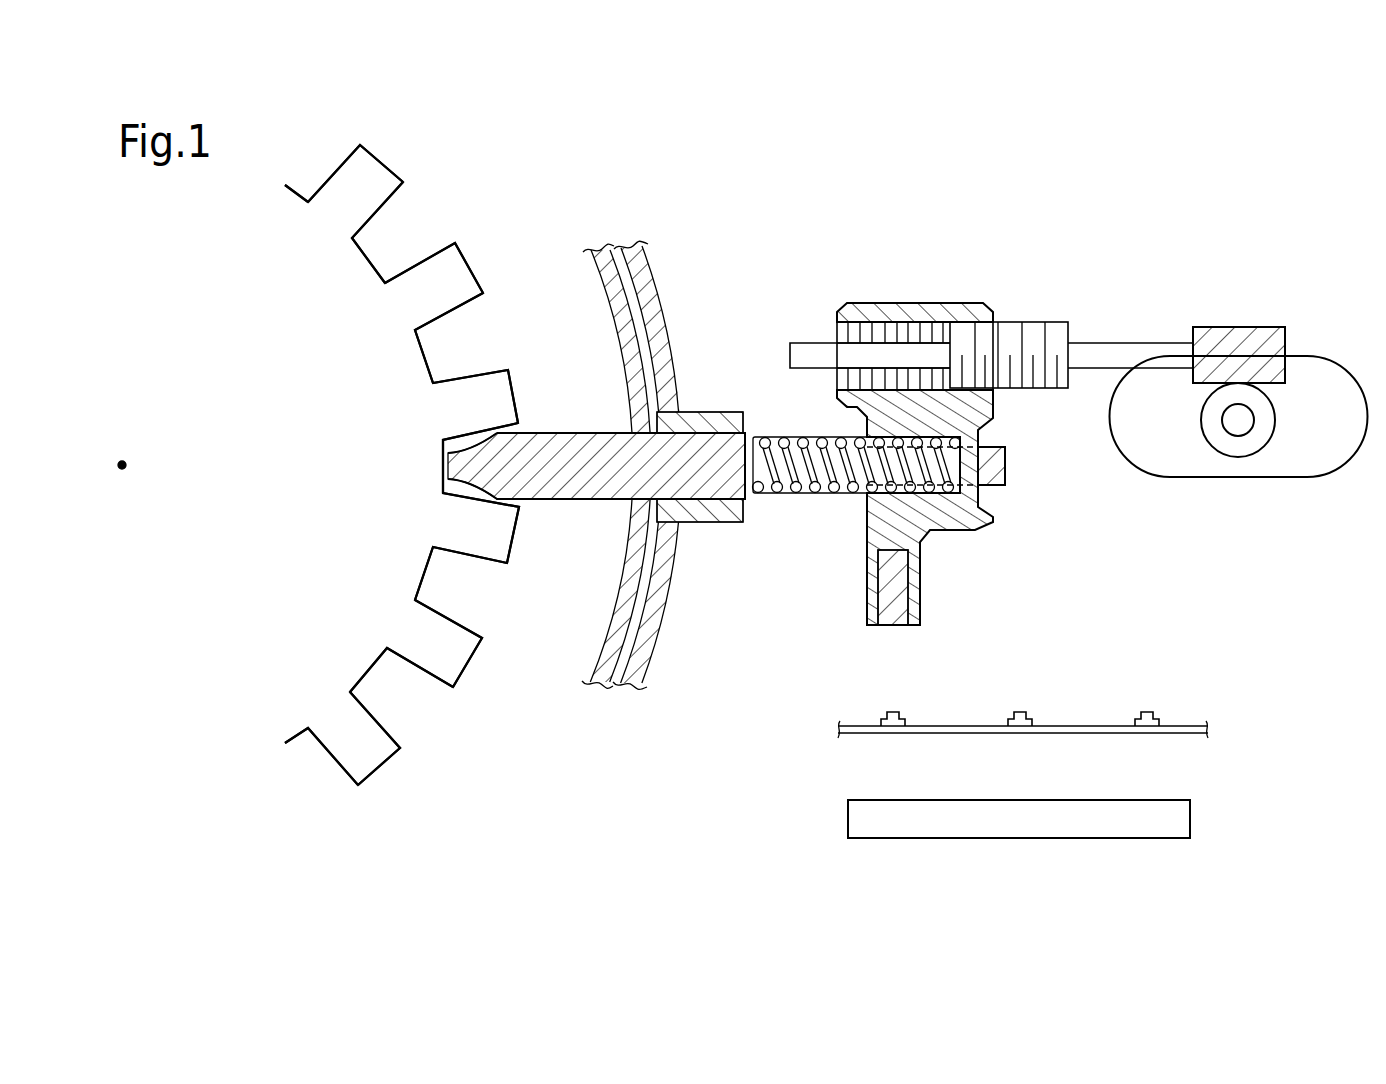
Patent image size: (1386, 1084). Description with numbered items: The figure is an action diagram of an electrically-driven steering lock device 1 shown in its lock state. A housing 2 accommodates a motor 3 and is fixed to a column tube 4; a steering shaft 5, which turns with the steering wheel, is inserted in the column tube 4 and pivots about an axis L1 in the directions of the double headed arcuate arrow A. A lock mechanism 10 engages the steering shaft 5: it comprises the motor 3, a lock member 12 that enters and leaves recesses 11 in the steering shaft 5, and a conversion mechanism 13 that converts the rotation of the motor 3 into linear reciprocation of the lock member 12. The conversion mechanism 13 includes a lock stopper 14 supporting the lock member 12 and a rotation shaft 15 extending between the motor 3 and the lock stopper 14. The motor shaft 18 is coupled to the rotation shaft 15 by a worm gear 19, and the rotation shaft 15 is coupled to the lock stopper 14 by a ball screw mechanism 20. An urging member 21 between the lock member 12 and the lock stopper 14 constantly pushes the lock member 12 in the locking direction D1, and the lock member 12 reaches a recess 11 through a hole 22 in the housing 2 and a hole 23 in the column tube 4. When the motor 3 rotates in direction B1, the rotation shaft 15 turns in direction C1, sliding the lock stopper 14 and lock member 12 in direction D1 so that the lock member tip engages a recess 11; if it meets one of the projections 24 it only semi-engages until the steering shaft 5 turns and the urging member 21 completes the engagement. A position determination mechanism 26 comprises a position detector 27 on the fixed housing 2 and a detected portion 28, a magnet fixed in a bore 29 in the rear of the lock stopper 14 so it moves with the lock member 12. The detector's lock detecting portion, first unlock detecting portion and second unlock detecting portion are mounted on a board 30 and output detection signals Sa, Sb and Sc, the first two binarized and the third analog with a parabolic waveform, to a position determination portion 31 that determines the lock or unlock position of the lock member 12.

The steering lock device 1 is at (1298, 229).
The housing 2 is at (650, 277).
The motor 3 is at (1287, 480).
The column tube 4 is at (600, 282).
The steering shaft 5 is at (345, 160).
The lock mechanism 10 is at (1012, 527).
The recesses 11 is at (302, 200).
The lock member 12 is at (557, 432).
The conversion mechanism 13 is at (834, 295).
The lock stopper 14 is at (905, 303).
The rotation shaft 15 is at (1115, 342).
The motor shaft 18 is at (1238, 430).
The worm gear 19 is at (1246, 378).
The ball screw mechanism 20 is at (985, 318).
The urging member 21 is at (798, 495).
The hole 22 is at (718, 430).
The hole 23 is at (624, 450).
The projections 24 is at (384, 168).
The position determination mechanism 26 is at (852, 758).
The position detector 27 is at (893, 713).
The detected portion 28 is at (880, 627).
The bore 29 is at (905, 595).
The board 30 is at (1200, 722).
The position determination portion 31 is at (1150, 840).
The axis L1 is at (122, 460).
The double headed arcuate arrow A is at (152, 434).
The arrow B1 is at (1288, 395).
The arrow C1 is at (1158, 390).
The arrow D1 is at (612, 522).
The detection signal Sa is at (893, 733).
The detection signal Sb is at (1147, 733).
The detection signal Sc is at (1020, 733).